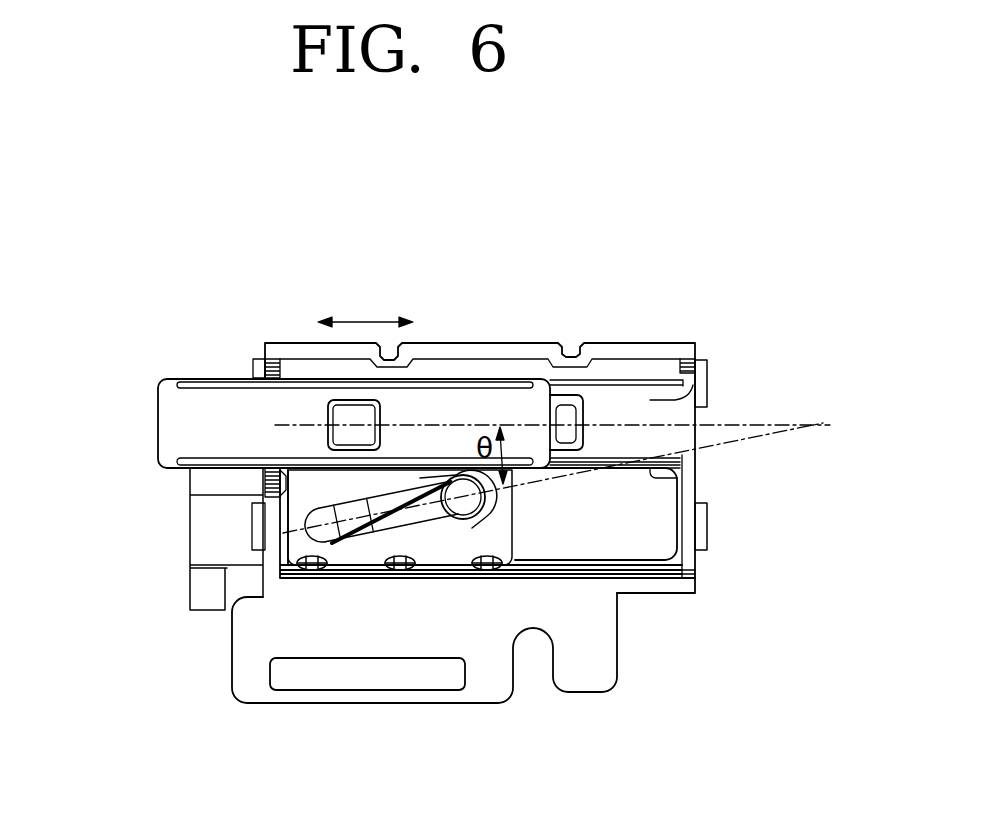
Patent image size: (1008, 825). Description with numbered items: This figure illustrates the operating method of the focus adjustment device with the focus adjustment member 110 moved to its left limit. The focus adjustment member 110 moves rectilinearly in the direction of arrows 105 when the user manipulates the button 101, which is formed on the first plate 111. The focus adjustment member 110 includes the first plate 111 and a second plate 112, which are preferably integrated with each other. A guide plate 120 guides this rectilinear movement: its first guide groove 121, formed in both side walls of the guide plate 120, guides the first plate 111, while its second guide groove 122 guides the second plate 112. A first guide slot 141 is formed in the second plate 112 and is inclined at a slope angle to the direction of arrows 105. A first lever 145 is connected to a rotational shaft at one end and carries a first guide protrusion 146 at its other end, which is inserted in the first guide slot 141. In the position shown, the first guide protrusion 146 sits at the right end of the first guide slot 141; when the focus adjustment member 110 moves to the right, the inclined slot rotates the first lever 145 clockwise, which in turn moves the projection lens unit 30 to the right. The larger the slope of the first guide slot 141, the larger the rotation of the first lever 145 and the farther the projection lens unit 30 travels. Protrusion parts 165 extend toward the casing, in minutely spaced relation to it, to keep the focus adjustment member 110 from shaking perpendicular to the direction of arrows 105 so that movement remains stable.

The projection lens unit 30 is at (190, 620).
The button 101 is at (396, 400).
The arrows 105 is at (364, 322).
The focus adjustment member 110 is at (284, 445).
The first plate 111 is at (168, 423).
The second plate 112 is at (293, 508).
The guide plate 120 is at (241, 695).
The first guide groove 121 is at (650, 399).
The second guide groove 122 is at (650, 474).
The first guide slot 141 is at (350, 546).
The first lever 145 is at (433, 518).
The first guide protrusion 146 is at (490, 514).
The protrusion parts 165 is at (400, 570).